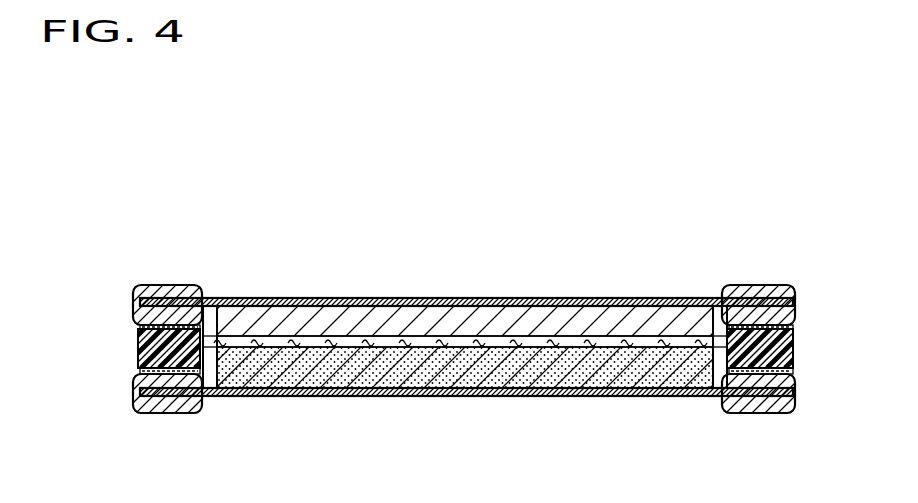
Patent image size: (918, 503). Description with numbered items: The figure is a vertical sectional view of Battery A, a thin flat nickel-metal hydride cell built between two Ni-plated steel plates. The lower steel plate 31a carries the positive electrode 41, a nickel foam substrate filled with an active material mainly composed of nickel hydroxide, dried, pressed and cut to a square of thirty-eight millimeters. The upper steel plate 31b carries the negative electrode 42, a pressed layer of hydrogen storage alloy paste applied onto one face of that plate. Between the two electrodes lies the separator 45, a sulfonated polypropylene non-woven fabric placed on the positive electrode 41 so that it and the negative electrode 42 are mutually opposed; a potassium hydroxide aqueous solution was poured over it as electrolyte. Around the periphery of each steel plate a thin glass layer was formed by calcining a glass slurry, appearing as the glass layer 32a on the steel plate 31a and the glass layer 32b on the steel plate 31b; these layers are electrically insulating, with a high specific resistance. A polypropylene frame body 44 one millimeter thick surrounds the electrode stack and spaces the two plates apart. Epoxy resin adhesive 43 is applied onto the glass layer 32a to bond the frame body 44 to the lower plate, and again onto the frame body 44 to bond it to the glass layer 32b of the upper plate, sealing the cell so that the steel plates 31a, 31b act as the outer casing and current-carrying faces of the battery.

The steel plate 31a is at (635, 398).
The steel plate 31b is at (522, 299).
The glass layer 32a is at (163, 400).
The glass layer 32b is at (165, 284).
The positive electrode 41 is at (388, 387).
The negative electrode 42 is at (383, 312).
The epoxy resin adhesive 43 is at (138, 323).
The frame body 44 is at (138, 350).
The separator 45 is at (277, 340).